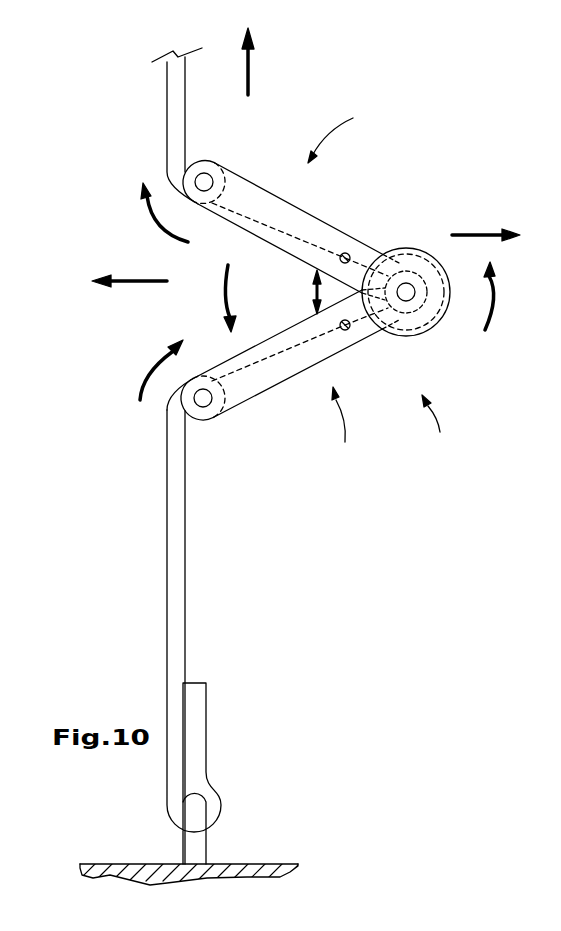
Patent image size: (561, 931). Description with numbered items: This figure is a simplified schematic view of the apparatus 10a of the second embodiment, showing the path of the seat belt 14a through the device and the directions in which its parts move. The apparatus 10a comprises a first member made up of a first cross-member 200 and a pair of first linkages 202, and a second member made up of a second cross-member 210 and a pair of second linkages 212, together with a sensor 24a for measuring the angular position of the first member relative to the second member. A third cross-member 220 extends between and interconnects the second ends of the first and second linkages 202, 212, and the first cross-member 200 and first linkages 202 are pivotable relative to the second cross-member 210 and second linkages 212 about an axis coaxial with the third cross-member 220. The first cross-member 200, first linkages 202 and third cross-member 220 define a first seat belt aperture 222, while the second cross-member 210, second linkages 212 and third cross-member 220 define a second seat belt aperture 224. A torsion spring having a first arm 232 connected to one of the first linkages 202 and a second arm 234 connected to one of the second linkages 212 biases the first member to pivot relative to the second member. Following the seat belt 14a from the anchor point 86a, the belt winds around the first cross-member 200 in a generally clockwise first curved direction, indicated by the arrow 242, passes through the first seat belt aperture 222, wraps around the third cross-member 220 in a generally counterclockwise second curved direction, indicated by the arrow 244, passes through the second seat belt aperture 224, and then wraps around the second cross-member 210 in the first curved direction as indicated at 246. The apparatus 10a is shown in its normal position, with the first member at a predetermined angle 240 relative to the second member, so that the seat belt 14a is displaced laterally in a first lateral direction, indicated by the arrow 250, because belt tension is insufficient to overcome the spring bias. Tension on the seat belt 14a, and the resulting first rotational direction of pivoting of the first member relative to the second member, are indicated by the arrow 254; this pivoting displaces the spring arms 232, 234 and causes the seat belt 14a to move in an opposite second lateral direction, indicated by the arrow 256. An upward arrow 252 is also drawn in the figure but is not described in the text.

The apparatus 10a is at (444, 426).
The seat belt 14a is at (167, 123).
The sensor 24a is at (422, 328).
The anchor point 86a is at (193, 845).
The first cross-member 200 is at (205, 420).
The first linkages 202 is at (238, 387).
The second cross-member 210 is at (207, 160).
The second linkages 212 is at (268, 202).
The third cross-member 220 is at (443, 322).
The first seat belt aperture 222 is at (344, 428).
The second seat belt aperture 224 is at (354, 131).
The first arm 232 is at (378, 258).
The second arm 234 is at (372, 330).
The predetermined angle 240 is at (313, 293).
The arrow indicating first curved direction 242 is at (142, 370).
The arrow indicating second curved direction 244 is at (495, 312).
The indication of first curved direction at second cross-member 246 is at (160, 227).
The arrow indicating first lateral direction 250 is at (473, 233).
The upward movement arrow 252 is at (250, 66).
The arrow indicating seat belt tension and first rotational direction 254 is at (222, 293).
The arrow indicating second lateral direction 256 is at (140, 280).